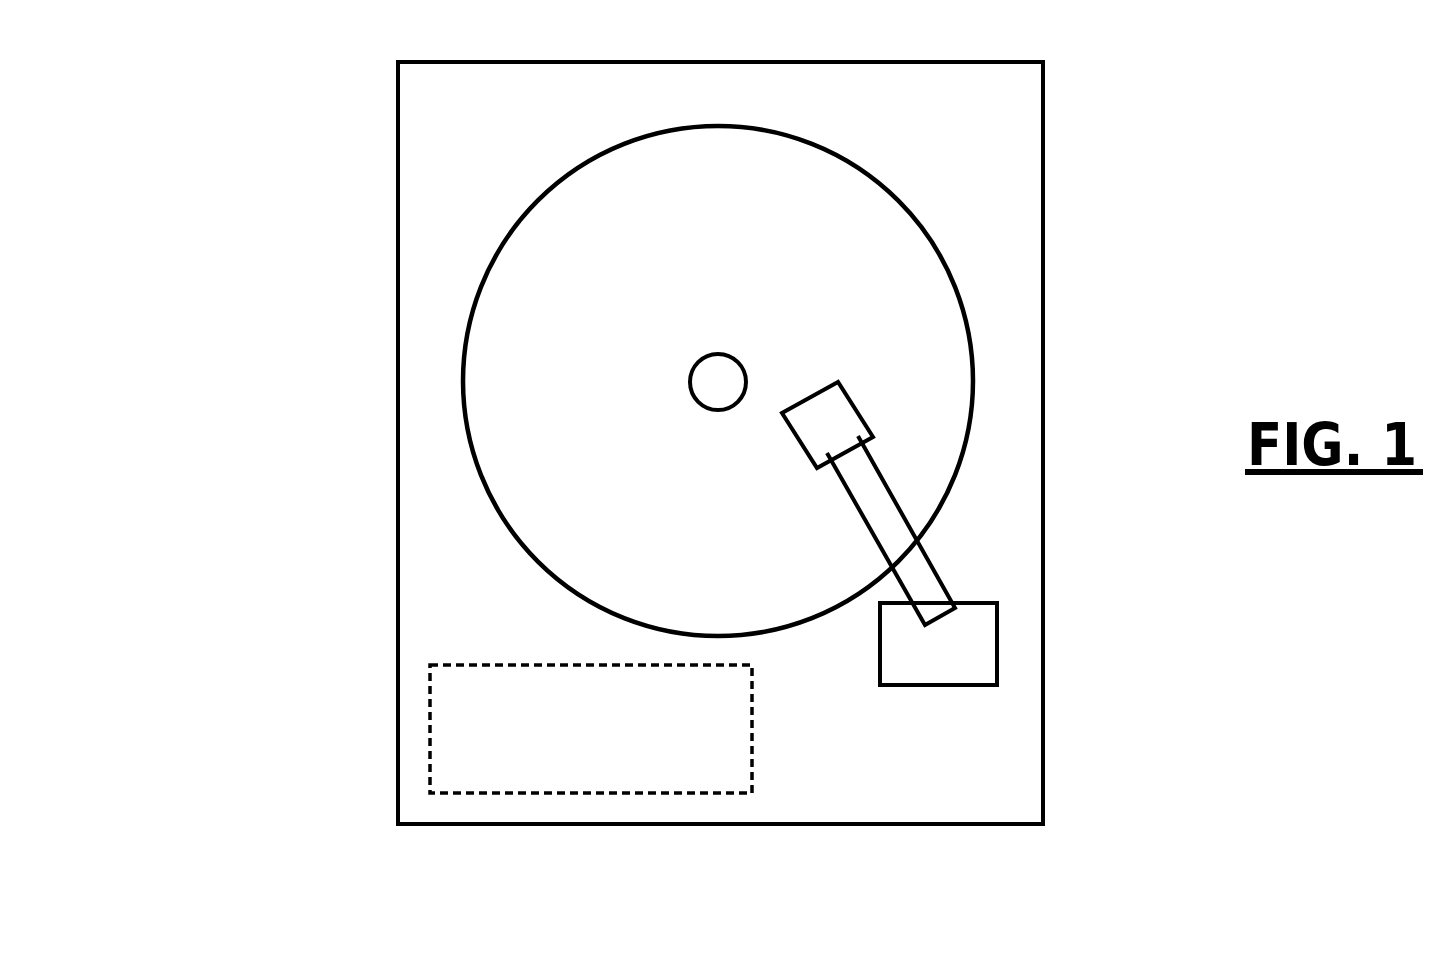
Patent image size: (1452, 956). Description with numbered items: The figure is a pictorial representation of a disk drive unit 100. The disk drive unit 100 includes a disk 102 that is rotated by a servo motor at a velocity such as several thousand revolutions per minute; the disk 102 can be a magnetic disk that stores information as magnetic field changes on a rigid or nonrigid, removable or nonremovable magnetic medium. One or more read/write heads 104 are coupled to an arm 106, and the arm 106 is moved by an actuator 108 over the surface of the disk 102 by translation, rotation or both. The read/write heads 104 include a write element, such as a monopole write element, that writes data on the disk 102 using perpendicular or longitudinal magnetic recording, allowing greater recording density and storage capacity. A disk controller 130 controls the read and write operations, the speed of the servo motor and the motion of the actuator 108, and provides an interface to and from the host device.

The disk drive unit 100 is at (326, 470).
The disk 102 is at (557, 181).
The read/write heads 104 is at (900, 422).
The arm 106 is at (903, 513).
The actuator 108 is at (880, 658).
The disk controller 130 is at (591, 729).